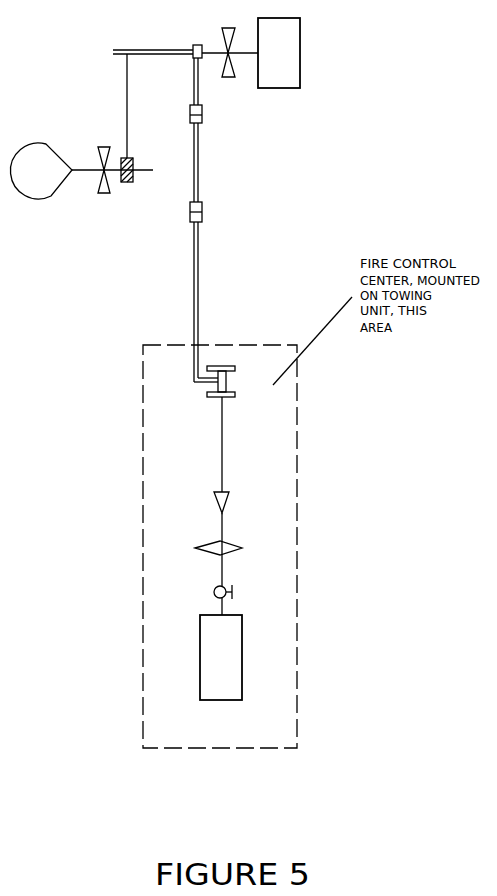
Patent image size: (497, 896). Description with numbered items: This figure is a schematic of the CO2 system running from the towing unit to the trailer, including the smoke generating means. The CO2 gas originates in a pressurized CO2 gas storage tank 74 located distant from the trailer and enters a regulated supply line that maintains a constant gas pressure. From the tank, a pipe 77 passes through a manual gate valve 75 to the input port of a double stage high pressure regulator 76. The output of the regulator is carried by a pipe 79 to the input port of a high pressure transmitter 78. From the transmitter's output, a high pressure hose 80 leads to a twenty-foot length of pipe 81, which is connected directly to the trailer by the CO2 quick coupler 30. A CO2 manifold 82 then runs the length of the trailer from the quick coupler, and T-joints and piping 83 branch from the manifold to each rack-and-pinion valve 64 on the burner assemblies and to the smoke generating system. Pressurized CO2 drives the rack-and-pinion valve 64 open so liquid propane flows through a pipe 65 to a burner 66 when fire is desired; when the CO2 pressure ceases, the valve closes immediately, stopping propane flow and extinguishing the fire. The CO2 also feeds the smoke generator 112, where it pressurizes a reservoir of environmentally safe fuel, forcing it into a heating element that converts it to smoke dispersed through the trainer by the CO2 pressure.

The CO2 quick coupler 30 is at (202, 118).
The rack-and-pinion valve 64 is at (125, 183).
The pipe 65 is at (86, 169).
The burner 66 is at (40, 193).
The pressurized CO2 gas storage tank 74 is at (227, 687).
The manual gate valve 75 is at (232, 597).
The double stage high pressure regulator 76 is at (230, 551).
The pipe 77 is at (222, 568).
The high pressure transmitter 78 is at (233, 498).
The pipe 79 is at (222, 528).
The high pressure hose 80 is at (197, 245).
The pipe 81 is at (197, 165).
The CO2 manifold 82 is at (196, 85).
The T-joints and piping 83 is at (127, 65).
The smoke generator 112 is at (290, 65).